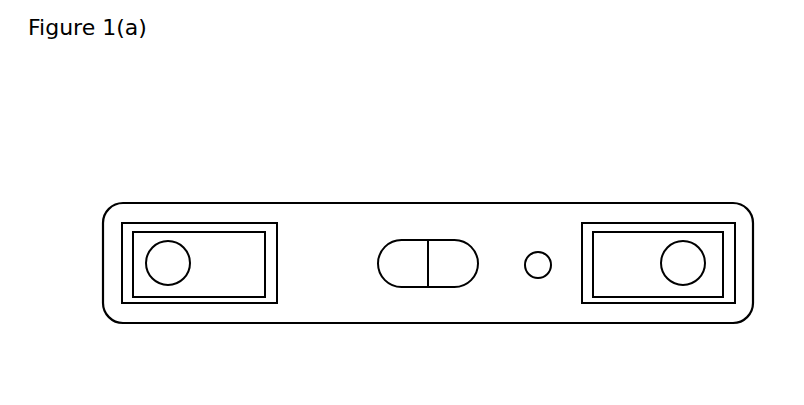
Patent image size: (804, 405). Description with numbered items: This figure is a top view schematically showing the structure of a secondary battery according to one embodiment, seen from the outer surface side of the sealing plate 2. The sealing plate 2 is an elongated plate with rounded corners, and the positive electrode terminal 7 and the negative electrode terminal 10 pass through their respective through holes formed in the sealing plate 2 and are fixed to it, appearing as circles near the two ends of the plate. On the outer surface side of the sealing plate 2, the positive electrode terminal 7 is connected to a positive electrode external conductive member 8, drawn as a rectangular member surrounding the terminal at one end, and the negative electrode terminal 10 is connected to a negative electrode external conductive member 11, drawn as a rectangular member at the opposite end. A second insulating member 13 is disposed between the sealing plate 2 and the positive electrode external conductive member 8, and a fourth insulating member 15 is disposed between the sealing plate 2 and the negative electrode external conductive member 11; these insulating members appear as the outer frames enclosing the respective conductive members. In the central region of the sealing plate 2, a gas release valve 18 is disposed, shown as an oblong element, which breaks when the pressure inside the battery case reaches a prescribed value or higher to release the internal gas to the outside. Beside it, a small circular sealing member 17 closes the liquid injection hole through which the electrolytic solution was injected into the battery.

The sealing plate 2 is at (333, 226).
The fourth insulating member 15 is at (186, 226).
The negative electrode external conductive member 11 is at (225, 267).
The negative electrode terminal 10 is at (167, 268).
The gas release valve 18 is at (448, 273).
The sealing member 17 is at (535, 262).
The second insulating member 13 is at (627, 228).
The positive electrode external conductive member 8 is at (632, 272).
The positive electrode terminal 7 is at (687, 268).